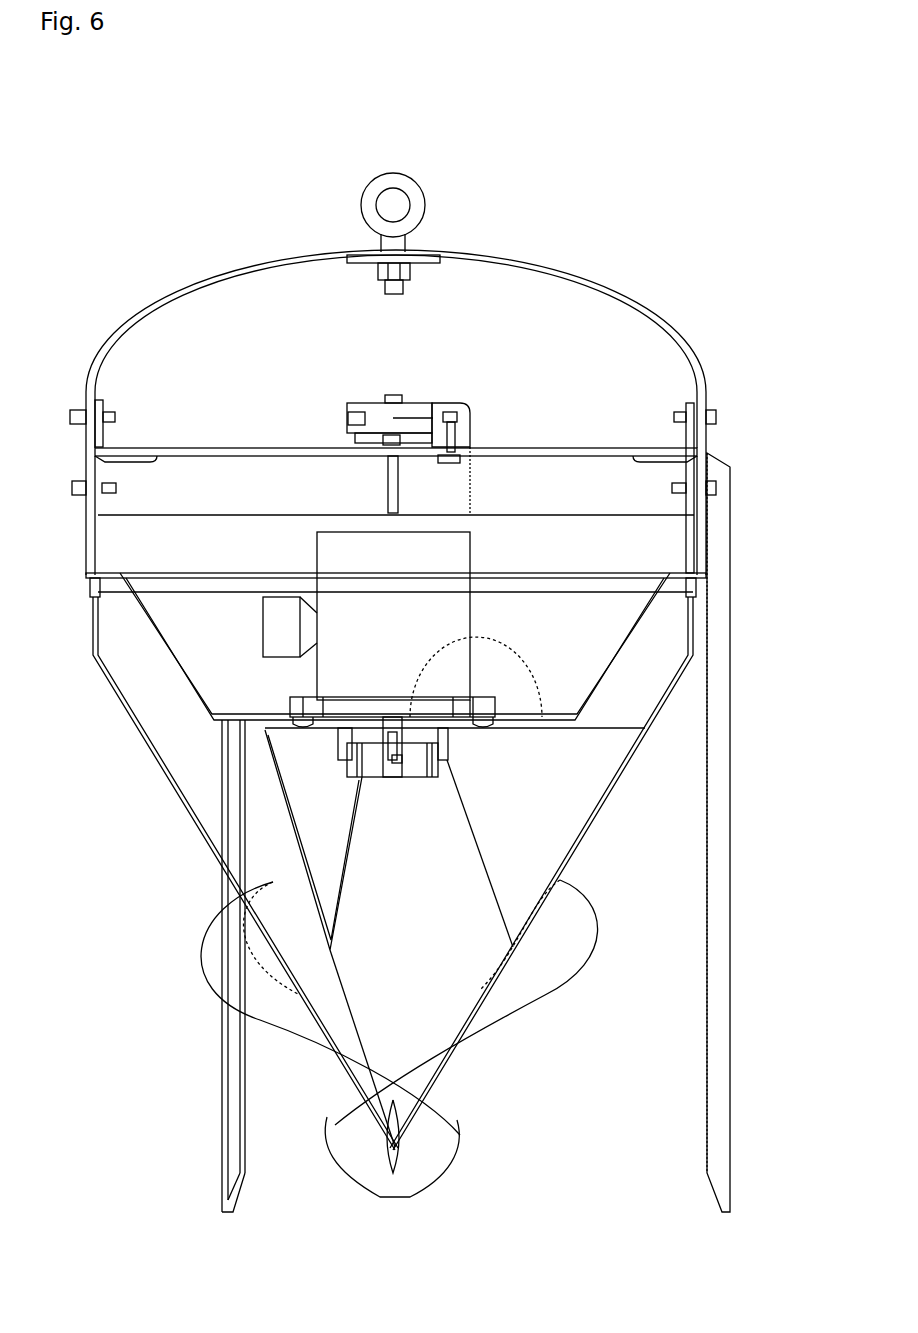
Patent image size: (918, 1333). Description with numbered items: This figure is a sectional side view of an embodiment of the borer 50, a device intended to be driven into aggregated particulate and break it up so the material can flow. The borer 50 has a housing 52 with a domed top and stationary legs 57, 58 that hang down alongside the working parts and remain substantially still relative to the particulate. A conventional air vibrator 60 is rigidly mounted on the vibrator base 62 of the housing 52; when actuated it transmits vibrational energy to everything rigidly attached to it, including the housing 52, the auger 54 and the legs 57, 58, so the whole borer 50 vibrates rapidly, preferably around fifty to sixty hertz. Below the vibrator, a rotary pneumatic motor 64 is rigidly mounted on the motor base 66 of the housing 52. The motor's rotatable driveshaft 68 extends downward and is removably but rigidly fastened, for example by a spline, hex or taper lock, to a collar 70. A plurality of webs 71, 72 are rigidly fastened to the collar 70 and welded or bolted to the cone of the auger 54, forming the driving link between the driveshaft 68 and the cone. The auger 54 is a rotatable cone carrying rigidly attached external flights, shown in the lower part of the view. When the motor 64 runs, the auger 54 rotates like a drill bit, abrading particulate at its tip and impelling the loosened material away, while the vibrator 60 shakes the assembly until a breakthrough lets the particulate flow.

The borer 50 is at (620, 248).
The housing 52 is at (97, 358).
The auger 54 is at (498, 1045).
The leg 57 is at (705, 1132).
The leg 58 is at (239, 1098).
The air vibrator 60 is at (472, 392).
The vibrator base 62 is at (223, 447).
The pneumatic motor 64 is at (402, 652).
The motor base 66 is at (598, 683).
The driveshaft 68 is at (397, 725).
The collar 70 is at (340, 740).
The web 71 is at (322, 807).
The web 72 is at (532, 847).